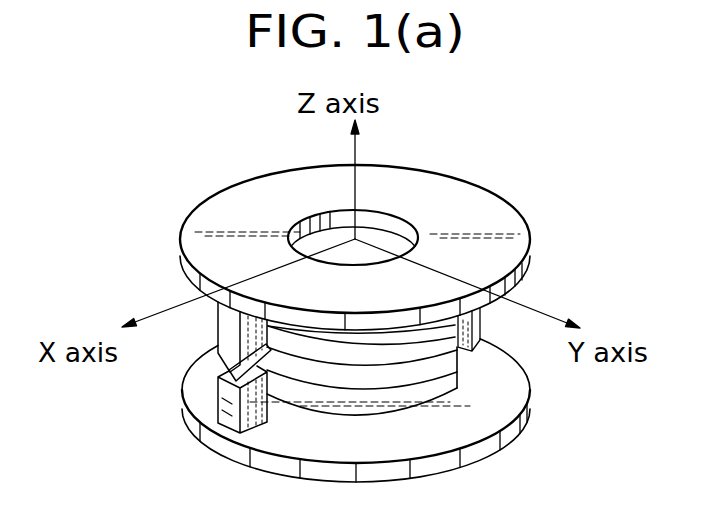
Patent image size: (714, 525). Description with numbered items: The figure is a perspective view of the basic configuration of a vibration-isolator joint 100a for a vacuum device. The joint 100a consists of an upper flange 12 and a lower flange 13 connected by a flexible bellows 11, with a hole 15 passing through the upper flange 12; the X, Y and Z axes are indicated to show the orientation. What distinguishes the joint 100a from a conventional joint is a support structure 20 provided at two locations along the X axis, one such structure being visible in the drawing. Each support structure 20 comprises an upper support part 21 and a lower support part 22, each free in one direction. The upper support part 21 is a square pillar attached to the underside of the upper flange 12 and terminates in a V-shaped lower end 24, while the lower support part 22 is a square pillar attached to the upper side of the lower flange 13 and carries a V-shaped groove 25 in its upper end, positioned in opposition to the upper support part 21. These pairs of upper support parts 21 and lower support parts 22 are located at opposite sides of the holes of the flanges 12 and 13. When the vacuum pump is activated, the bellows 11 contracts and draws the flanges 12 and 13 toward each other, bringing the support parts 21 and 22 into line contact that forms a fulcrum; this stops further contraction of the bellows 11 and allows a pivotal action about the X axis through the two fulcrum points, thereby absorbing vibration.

The joint 100a is at (204, 187).
The bellows 11 is at (427, 365).
The upper flange 12 is at (527, 265).
The lower flange 13 is at (512, 440).
The hole 15 is at (383, 228).
The support structure 20 is at (118, 370).
The upper support part 21 is at (228, 337).
The lower support part 22 is at (233, 420).
The V-shaped lower end 24 is at (223, 374).
The V-shaped groove 25 is at (221, 402).